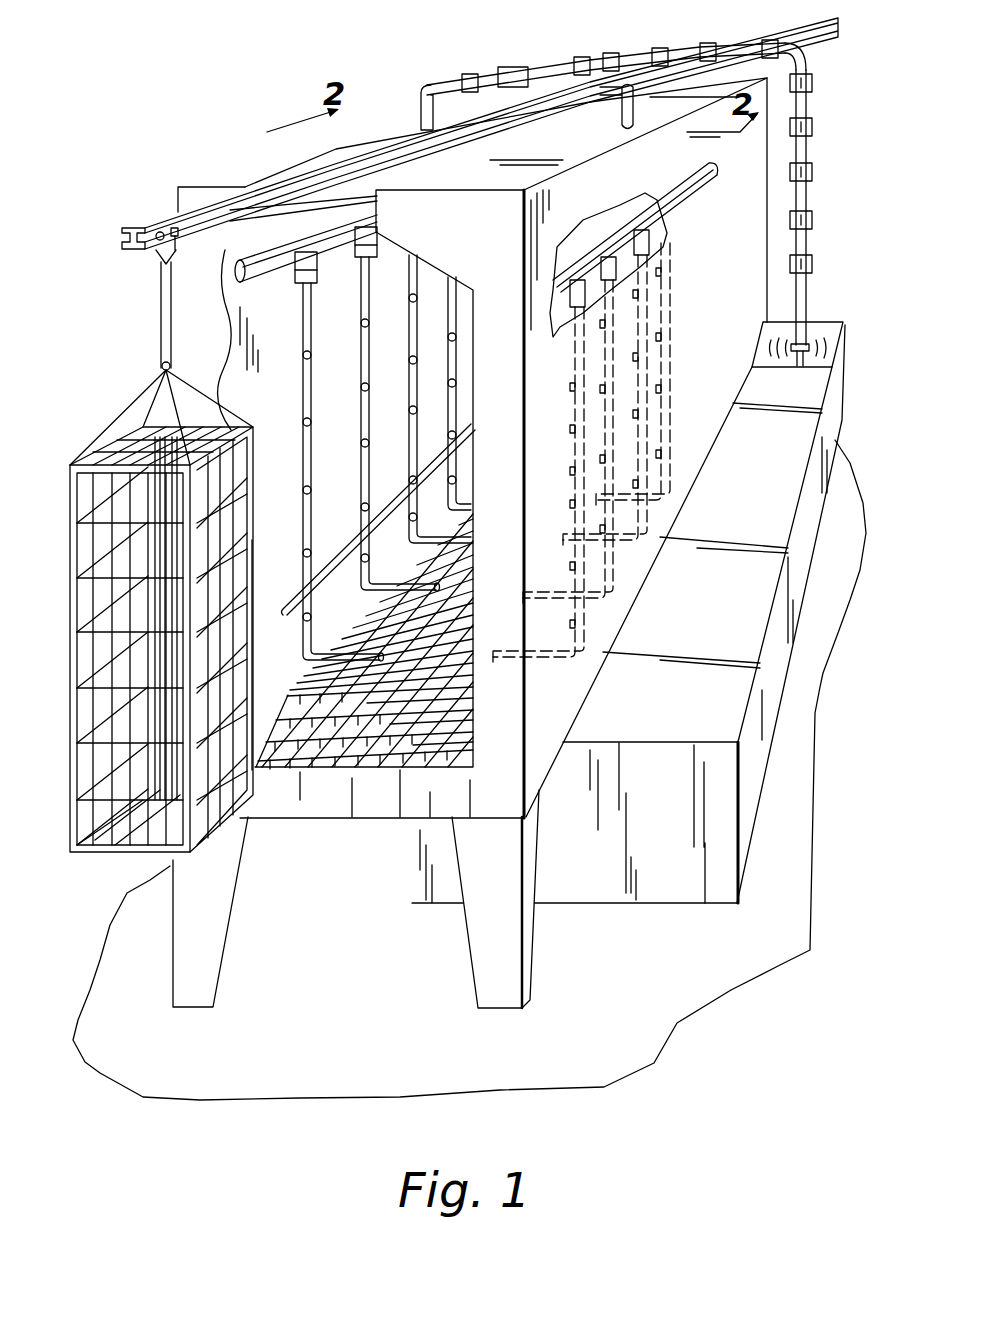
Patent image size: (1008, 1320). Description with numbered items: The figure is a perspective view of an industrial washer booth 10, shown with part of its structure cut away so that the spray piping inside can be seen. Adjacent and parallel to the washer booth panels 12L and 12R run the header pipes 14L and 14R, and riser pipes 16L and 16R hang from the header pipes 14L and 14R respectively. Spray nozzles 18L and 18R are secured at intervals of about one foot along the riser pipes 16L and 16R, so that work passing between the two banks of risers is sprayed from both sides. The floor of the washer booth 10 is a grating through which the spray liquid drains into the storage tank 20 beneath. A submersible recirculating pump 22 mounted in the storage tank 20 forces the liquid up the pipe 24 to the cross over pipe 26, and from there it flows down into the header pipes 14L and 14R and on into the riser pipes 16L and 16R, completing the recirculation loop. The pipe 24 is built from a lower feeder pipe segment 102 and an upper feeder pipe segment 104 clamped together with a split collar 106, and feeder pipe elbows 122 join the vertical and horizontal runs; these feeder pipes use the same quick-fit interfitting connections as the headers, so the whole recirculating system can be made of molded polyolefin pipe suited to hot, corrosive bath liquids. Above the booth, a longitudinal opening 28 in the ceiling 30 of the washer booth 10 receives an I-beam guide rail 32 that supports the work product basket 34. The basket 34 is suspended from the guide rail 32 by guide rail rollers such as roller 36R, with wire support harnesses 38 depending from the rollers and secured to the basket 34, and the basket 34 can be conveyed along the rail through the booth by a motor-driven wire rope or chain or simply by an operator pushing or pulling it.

The industrial washer booth 10 is at (226, 162).
The washer booth panel 12L is at (230, 338).
The washer booth panel 12R is at (694, 440).
The header pipe 14L is at (346, 225).
The header pipe 14R is at (698, 180).
The riser pipe 16L is at (433, 287).
The riser pipe 16R is at (668, 390).
The spray nozzle 18L is at (353, 470).
The spray nozzle 18R is at (655, 415).
The storage tank 20 is at (680, 893).
The submersible recirculating pump 22 is at (820, 330).
The pipe 24 is at (808, 106).
The cross over pipe 26 is at (480, 82).
The longitudinal opening 28 is at (322, 222).
The ceiling 30 is at (593, 147).
The I-beam guide rail 32 is at (143, 220).
The work product basket 34 is at (98, 858).
The guide rail roller 36R is at (160, 228).
The wire support harness 38 is at (157, 364).
The lower feeder pipe segment 102 is at (809, 200).
The upper feeder pipe segment 104 is at (809, 152).
The split collar 106 is at (812, 176).
The feeder pipe elbow 122 is at (434, 84).